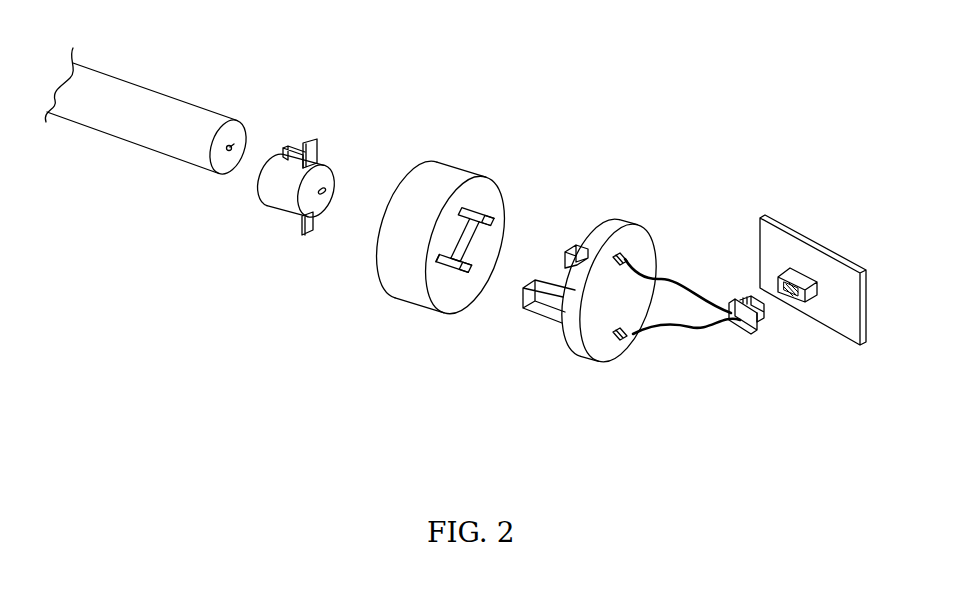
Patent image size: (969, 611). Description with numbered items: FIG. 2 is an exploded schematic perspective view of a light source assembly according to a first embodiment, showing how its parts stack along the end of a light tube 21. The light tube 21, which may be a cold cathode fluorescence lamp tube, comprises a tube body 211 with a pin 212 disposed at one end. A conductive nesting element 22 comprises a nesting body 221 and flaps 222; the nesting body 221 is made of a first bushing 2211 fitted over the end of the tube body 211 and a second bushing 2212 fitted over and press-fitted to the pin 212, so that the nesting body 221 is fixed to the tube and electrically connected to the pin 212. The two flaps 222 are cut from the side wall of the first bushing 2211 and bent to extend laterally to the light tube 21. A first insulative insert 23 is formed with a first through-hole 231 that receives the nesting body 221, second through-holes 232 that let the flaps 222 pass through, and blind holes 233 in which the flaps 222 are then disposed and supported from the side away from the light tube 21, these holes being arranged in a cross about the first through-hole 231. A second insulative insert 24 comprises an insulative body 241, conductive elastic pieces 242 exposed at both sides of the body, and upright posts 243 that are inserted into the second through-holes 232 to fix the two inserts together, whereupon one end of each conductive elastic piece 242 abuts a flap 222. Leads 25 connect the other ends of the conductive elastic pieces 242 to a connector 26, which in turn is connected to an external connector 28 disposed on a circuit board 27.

The light tube 21 is at (155, 113).
The tube body 211 is at (133, 128).
The pin 212 is at (230, 146).
The conductive nesting element 22 is at (257, 173).
The nesting body 221 is at (225, 200).
The first bushing 2211 is at (282, 189).
The second bushing 2212 is at (298, 216).
The flaps 222 is at (313, 152).
The first insulative insert 23 is at (439, 244).
The first through-hole 231 is at (457, 242).
The second through-holes 232 is at (492, 220).
The blind holes 233 is at (458, 268).
The second insulative insert 24 is at (603, 310).
The insulative body 241 is at (590, 347).
The conductive elastic pieces 242 is at (623, 340).
The upright posts 243 is at (535, 305).
The leads 25 is at (682, 325).
The connector 26 is at (750, 327).
The circuit board 27 is at (772, 248).
The external connector 28 is at (810, 298).